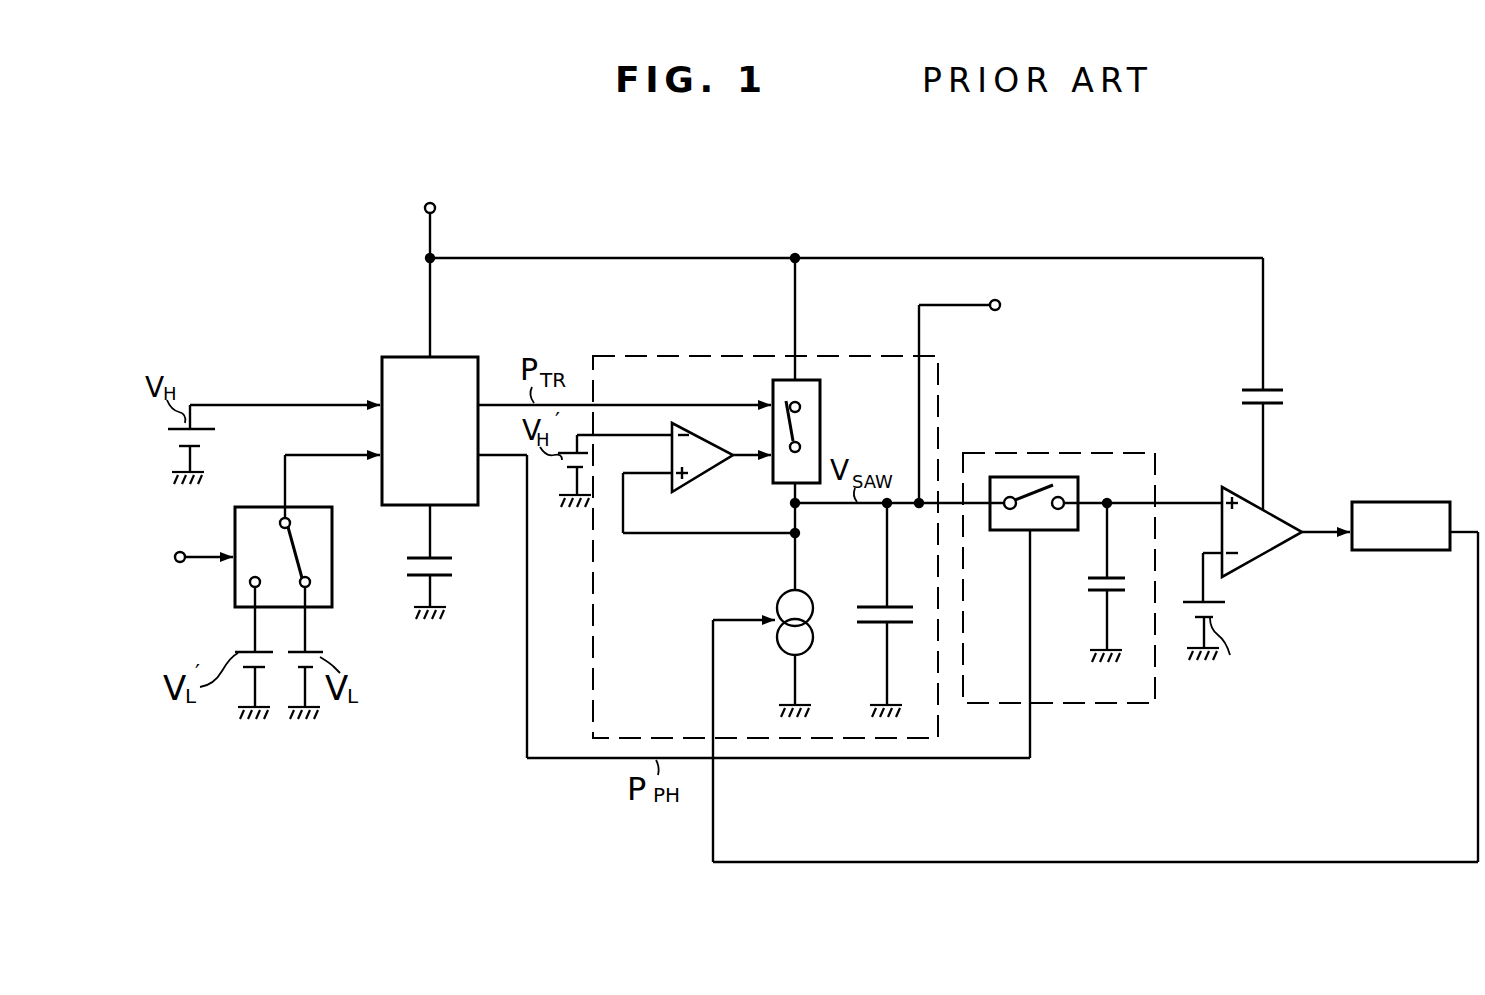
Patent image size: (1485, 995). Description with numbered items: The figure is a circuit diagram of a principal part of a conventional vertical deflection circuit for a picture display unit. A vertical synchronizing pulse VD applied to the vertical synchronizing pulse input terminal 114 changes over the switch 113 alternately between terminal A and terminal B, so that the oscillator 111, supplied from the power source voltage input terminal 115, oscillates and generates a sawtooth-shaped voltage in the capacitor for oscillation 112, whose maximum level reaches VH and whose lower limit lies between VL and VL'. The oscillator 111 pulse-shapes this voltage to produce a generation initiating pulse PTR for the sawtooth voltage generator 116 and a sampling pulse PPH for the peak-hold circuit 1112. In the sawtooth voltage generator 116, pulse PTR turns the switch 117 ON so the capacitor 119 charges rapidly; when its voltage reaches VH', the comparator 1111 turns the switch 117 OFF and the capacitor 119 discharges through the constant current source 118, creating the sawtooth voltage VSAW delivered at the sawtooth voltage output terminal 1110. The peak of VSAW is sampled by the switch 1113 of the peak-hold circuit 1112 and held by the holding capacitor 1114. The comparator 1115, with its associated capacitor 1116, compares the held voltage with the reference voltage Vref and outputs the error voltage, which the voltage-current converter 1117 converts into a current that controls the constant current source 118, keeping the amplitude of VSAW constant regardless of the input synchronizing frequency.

The oscillator 111 is at (480, 357).
The capacitor for oscillation 112 is at (413, 577).
The switch 113 is at (235, 608).
The vertical synchronizing pulse input terminal 114 is at (178, 563).
The power source voltage input terminal 115 is at (427, 215).
The sawtooth voltage generator 116 is at (593, 698).
The switch 117 is at (822, 410).
The constant current source 118 is at (777, 605).
The capacitor 119 is at (872, 605).
The sawtooth voltage output terminal 1110 is at (1000, 307).
The comparator 1111 is at (697, 477).
The peak-hold circuit 1112 is at (1157, 658).
The switch 1113 is at (1007, 532).
The holding capacitor 1114 is at (1102, 592).
The comparator 1115 is at (1255, 558).
The capacitor 1116 is at (1280, 390).
The voltage-current converter 1117 is at (1398, 552).